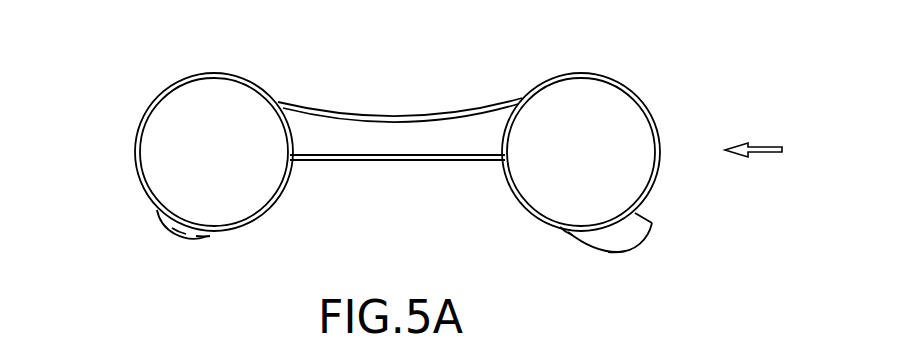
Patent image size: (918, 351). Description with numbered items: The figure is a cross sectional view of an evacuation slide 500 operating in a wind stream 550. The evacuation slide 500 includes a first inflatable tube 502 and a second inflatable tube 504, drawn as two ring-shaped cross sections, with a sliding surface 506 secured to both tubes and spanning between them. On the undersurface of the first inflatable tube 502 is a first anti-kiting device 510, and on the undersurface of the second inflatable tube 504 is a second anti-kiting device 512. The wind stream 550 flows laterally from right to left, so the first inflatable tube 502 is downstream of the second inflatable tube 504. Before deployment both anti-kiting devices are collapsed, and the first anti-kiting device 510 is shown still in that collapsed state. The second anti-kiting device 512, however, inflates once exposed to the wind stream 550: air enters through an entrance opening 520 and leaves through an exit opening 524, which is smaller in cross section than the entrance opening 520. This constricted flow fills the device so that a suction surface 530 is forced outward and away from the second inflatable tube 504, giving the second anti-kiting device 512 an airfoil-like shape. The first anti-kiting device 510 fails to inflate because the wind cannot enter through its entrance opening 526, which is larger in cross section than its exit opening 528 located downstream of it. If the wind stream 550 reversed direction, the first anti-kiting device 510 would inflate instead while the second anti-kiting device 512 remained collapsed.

The evacuation slide 500 is at (104, 60).
The first inflatable tube 502 is at (136, 148).
The second inflatable tube 504 is at (627, 85).
The sliding surface 506 is at (398, 117).
The first anti-kiting device 510 is at (182, 226).
The second anti-kiting device 512 is at (643, 242).
The entrance opening 520 is at (640, 214).
The exit opening 524 is at (567, 235).
The entrance opening 526 is at (158, 214).
The exit opening 528 is at (205, 233).
The suction surface 530 is at (618, 252).
The wind stream 550 is at (766, 146).